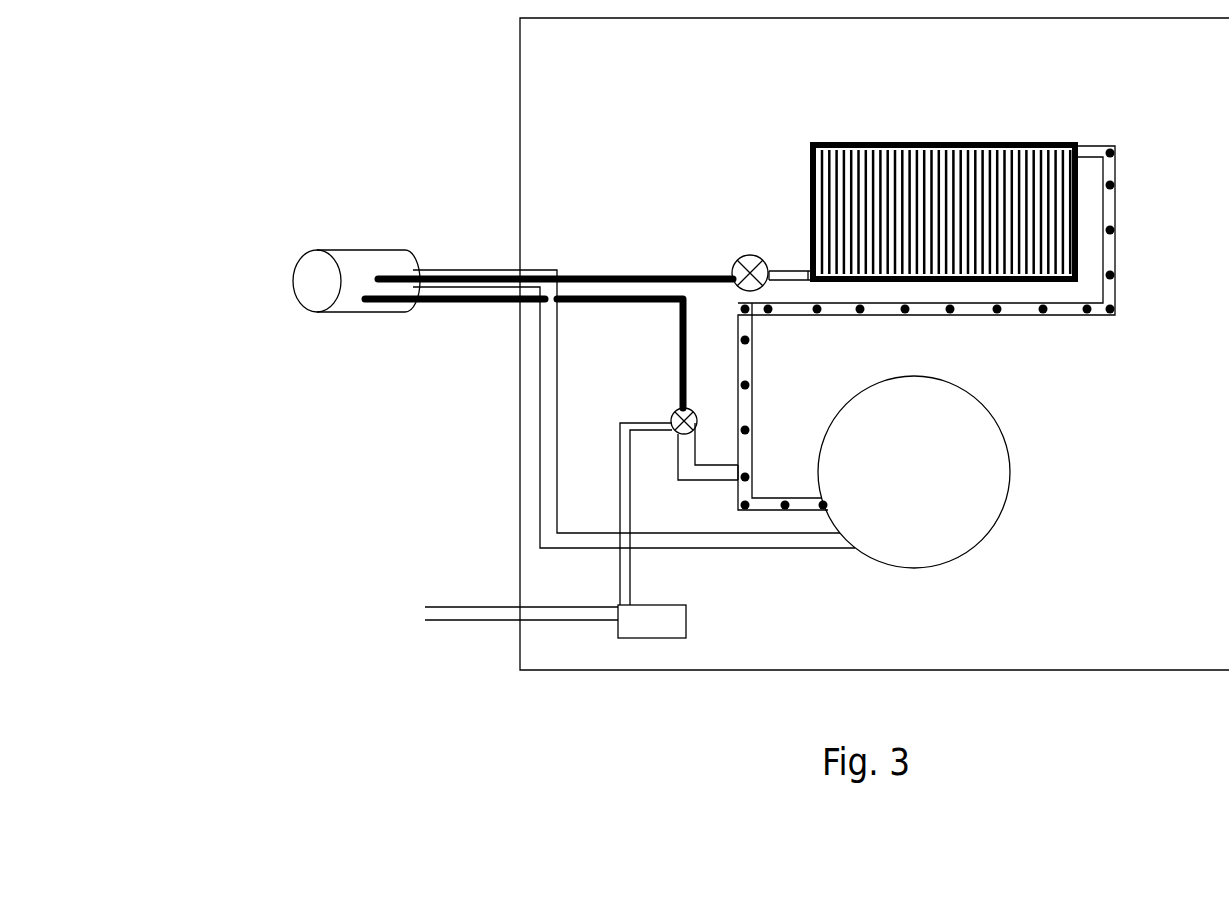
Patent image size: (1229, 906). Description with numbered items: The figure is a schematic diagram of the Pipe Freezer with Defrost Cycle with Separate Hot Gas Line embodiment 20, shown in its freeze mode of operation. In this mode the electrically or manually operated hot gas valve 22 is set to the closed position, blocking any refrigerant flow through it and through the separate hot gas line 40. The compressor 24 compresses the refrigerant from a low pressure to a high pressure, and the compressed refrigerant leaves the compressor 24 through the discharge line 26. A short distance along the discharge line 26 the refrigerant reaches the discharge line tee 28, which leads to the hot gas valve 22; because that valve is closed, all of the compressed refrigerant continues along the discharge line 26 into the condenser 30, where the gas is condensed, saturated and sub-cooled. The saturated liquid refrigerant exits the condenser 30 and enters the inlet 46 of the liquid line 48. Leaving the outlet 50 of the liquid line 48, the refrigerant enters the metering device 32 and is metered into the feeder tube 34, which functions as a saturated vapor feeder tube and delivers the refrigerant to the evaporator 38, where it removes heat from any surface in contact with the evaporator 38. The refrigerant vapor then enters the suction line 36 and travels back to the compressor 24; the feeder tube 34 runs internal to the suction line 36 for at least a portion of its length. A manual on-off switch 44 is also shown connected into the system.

The Pipe Freezer with Defrost Cycle with Separate Hot Gas Line embodiment 20 is at (205, 304).
The hot gas valve 22 is at (672, 417).
The compressor 24 is at (1003, 518).
The discharge line 26 is at (790, 498).
The discharge line tee 28 is at (745, 477).
The condenser 30 is at (1012, 142).
The metering device 32 is at (733, 263).
The feeder tube 34 is at (587, 276).
The suction line 36 is at (480, 270).
The evaporator 38 is at (343, 250).
The hot gas line 40 is at (678, 482).
The manual on-off switch 44 is at (690, 617).
The inlet of liquid line 46 is at (808, 268).
The liquid line 48 is at (795, 270).
The outlet of liquid line 50 is at (770, 265).